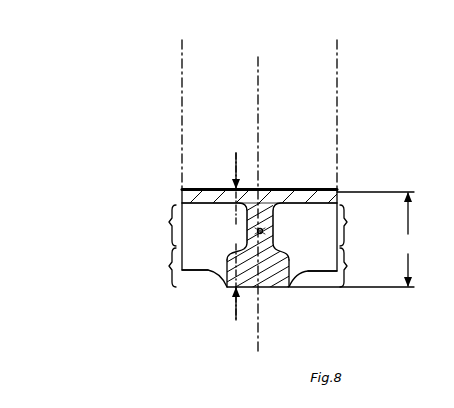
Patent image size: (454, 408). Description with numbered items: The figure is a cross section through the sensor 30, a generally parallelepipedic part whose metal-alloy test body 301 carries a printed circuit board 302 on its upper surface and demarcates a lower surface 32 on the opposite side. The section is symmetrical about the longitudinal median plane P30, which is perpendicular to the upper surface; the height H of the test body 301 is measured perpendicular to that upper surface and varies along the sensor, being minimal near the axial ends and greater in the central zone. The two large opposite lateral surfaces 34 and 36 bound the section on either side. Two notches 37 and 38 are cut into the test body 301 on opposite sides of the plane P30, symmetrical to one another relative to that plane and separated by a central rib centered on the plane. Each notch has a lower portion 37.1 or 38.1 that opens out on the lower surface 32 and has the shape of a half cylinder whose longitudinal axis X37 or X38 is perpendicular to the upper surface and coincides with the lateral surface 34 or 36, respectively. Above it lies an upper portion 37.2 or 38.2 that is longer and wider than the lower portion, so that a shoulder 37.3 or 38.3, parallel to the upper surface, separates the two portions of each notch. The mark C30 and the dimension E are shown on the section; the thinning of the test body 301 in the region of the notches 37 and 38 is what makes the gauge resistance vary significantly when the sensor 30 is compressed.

The sensor 30 is at (147, 167).
The lower surface 32 is at (264, 290).
The lateral surface 34 is at (180, 191).
The lateral surface 36 is at (340, 192).
The notch 37 is at (203, 261).
The lower portion 37.1 is at (156, 267).
The upper portion 37.2 is at (156, 225).
The shoulder 37.3 is at (233, 249).
The notch 38 is at (295, 268).
The lower portion 38.1 is at (360, 267).
The upper portion 38.2 is at (360, 225).
The shoulder 38.3 is at (289, 244).
The test body 301 is at (300, 200).
The printed circuit board 302 is at (208, 189).
The centre of the profile C30 is at (265, 230).
The longitudinal median plane P30 is at (265, 196).
The longitudinal axis X37 is at (170, 106).
The longitudinal axis X38 is at (332, 106).
The thickness dimension E is at (235, 236).
The height H is at (352, 240).